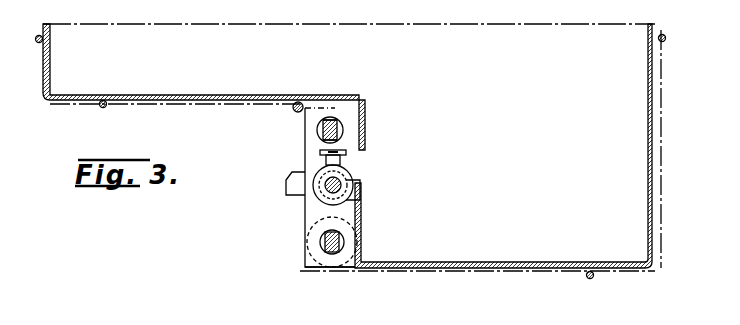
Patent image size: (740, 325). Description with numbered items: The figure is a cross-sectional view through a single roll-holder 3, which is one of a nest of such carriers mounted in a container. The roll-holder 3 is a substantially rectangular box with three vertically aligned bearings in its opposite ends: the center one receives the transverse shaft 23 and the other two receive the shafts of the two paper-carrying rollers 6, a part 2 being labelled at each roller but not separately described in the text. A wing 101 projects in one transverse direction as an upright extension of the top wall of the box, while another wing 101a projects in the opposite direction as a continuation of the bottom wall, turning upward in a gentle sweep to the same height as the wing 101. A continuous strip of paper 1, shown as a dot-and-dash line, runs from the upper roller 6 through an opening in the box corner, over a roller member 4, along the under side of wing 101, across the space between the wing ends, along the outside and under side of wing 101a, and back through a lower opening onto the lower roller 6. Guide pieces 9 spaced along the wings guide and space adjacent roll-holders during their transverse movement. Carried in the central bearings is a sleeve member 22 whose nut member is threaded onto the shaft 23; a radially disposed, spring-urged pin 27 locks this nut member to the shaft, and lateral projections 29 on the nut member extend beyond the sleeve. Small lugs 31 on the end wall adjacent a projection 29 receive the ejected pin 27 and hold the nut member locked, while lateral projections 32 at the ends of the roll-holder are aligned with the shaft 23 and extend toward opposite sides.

The strip of paper 1 is at (476, 24).
The wing 101 is at (200, 97).
The lower wing 101a is at (652, 191).
The guide piece 9 is at (35, 41).
The roll-holder 3 is at (331, 97).
The roller member 4 is at (292, 109).
The rivet sleeve 2 is at (318, 133).
The roller 6 is at (344, 131).
The lug 31 is at (345, 152).
The pin 27 is at (346, 170).
The lateral projection 29 is at (312, 172).
The lateral projection 32 is at (287, 181).
The shaft 23 is at (322, 188).
The sleeve member 22 is at (344, 238).